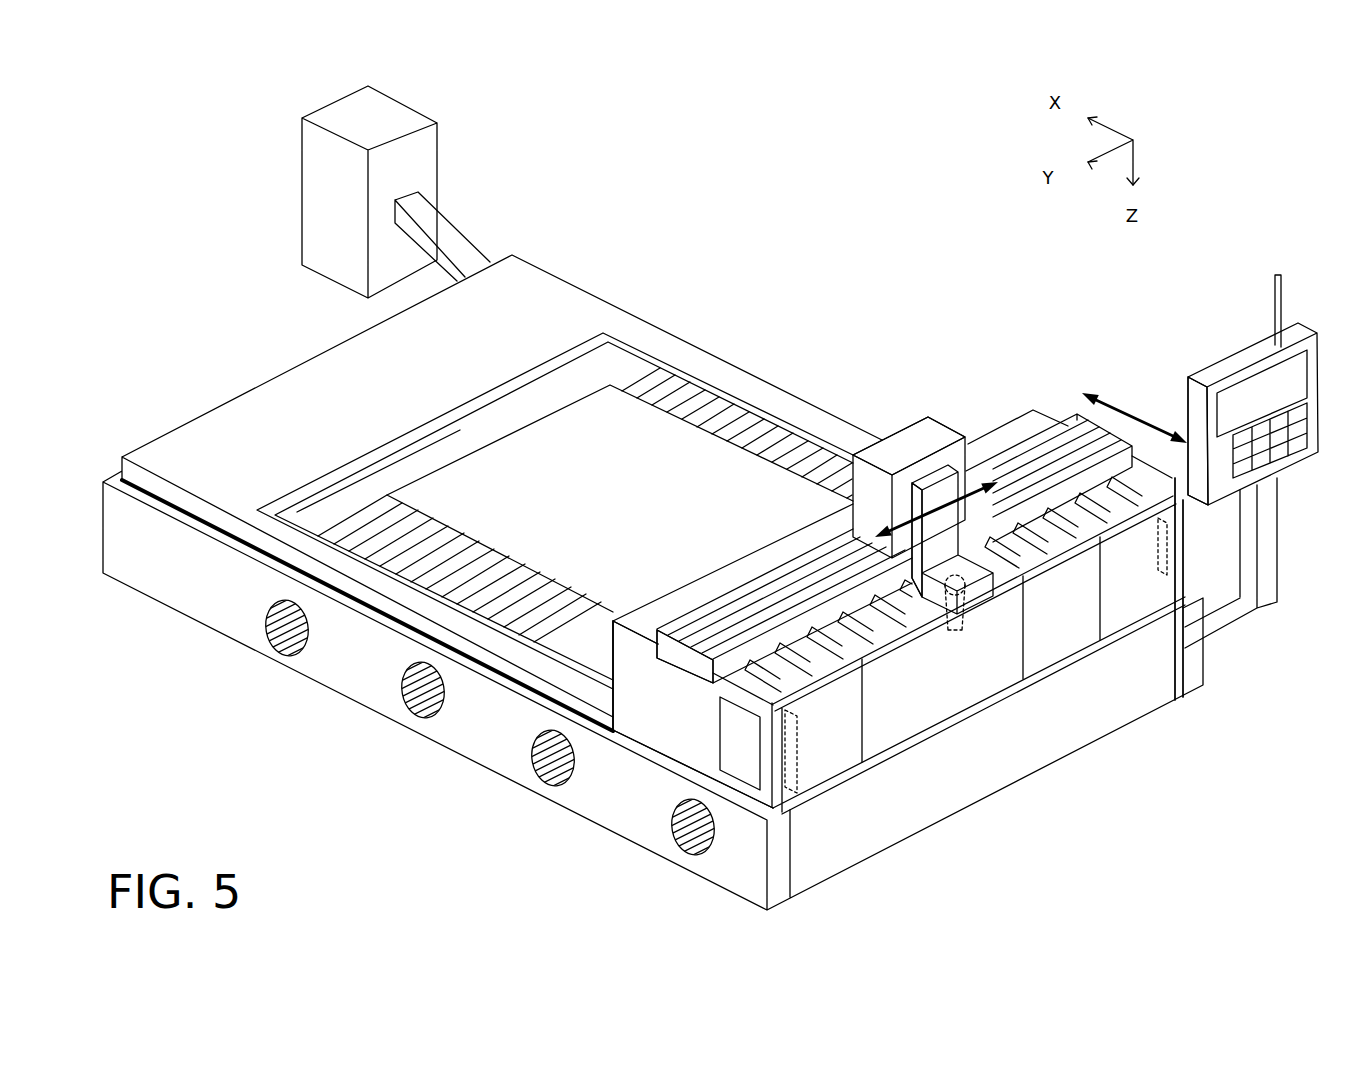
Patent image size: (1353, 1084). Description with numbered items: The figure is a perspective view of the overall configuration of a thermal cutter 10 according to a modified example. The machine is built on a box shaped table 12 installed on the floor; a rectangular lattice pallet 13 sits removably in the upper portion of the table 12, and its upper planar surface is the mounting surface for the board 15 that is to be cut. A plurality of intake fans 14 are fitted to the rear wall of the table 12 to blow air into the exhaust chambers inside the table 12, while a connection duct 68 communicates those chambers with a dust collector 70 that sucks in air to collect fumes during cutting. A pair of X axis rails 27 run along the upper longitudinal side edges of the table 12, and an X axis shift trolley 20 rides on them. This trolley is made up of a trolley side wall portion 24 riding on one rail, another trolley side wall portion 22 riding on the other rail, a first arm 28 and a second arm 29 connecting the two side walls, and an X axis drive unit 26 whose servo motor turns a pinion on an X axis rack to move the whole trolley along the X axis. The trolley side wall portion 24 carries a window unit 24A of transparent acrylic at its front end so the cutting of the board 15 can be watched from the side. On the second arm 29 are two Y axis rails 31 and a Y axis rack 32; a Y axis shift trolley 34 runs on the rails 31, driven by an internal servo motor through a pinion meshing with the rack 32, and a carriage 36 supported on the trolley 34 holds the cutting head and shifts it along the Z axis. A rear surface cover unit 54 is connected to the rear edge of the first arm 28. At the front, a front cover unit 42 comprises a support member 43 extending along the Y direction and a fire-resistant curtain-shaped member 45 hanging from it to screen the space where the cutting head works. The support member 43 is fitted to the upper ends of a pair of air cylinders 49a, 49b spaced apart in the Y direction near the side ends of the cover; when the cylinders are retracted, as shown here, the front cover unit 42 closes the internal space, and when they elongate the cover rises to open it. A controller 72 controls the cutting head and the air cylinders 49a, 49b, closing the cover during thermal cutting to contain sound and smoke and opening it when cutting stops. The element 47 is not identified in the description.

The thermal cutter 10 is at (818, 194).
The table 12 is at (600, 315).
The lattice pallet 13 is at (665, 383).
The intake fans 14 is at (418, 708).
The board 15 is at (690, 450).
The X axis shift trolley 20 is at (1008, 288).
The trolley side wall portion 22 is at (1177, 565).
The trolley side wall portion 24 is at (615, 657).
The window unit 24A is at (753, 747).
The X axis drive unit 26 is at (1157, 400).
The X axis rails 27 is at (527, 684).
The first arm 28 is at (612, 690).
The second arm 29 is at (703, 667).
The Y axis rails 31 is at (1040, 425).
The Y axis rack 32 is at (1085, 420).
The Y axis shift trolley 34 is at (910, 440).
The carriage 36 is at (938, 478).
The front cover unit 42 is at (853, 803).
The support member 43 is at (1015, 640).
The curtain-shaped member 45 is at (917, 698).
The frame post 47 is at (1140, 580).
The air cylinder 49a is at (1160, 585).
The air cylinder 49b is at (803, 793).
The rear surface cover unit 54 is at (1004, 395).
The connection duct 68 is at (450, 238).
The dust collector 70 is at (417, 176).
The controller 72 is at (1248, 343).